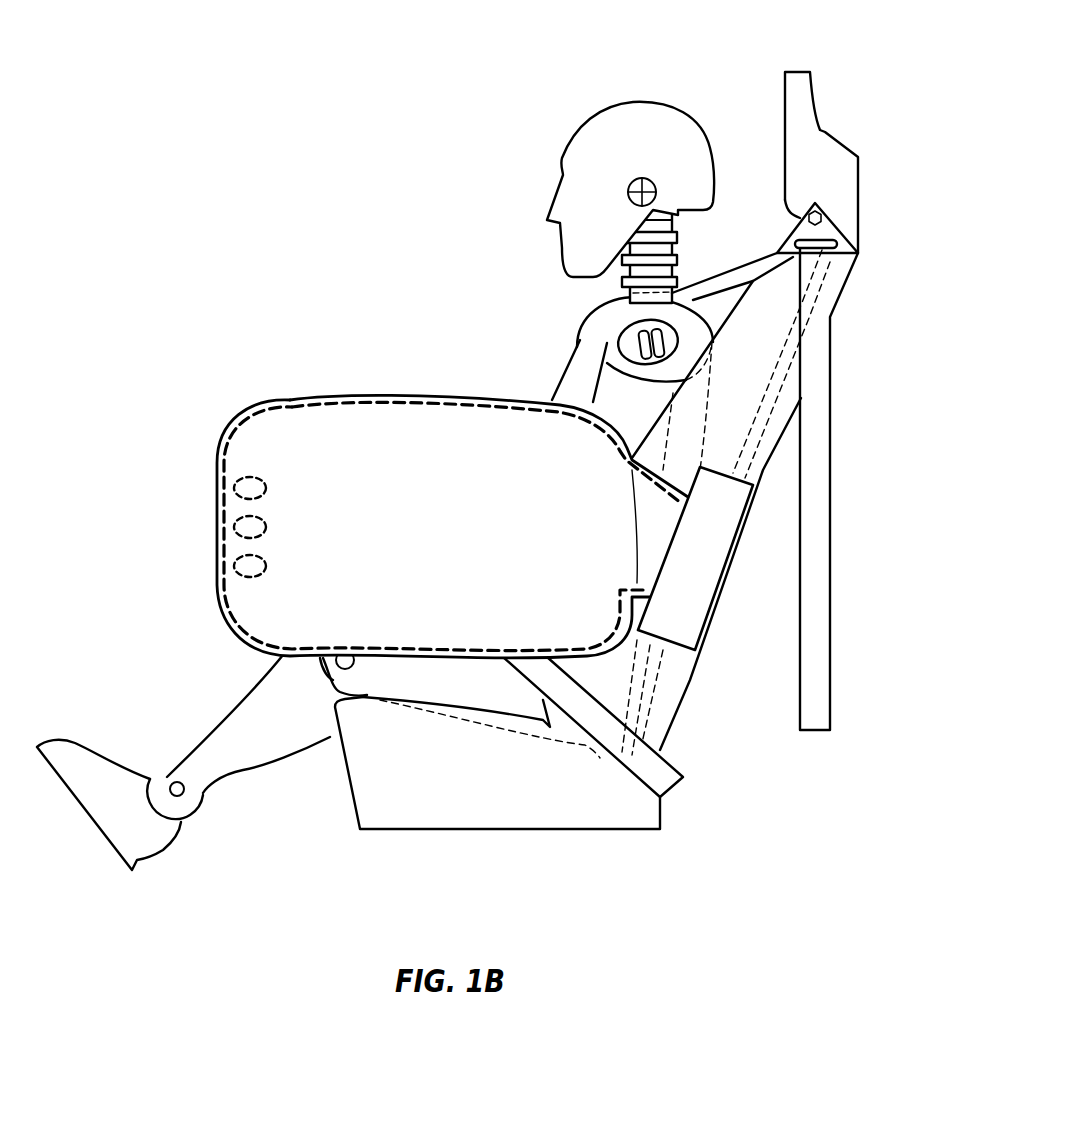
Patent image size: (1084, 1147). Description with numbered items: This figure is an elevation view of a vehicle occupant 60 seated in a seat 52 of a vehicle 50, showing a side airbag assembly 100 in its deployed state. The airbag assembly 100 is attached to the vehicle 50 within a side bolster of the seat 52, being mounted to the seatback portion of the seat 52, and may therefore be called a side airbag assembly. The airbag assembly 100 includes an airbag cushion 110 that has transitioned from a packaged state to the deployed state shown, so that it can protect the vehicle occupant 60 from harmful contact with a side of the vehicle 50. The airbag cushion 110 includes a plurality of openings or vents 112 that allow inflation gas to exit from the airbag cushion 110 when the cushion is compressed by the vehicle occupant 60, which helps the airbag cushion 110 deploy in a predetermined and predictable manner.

The vehicle 50 is at (745, 118).
The seat 52 is at (450, 810).
The vehicle occupant 60 is at (562, 372).
The airbag assembly 100 is at (689, 626).
The airbag cushion 110 is at (322, 433).
The vents 112 is at (238, 492).